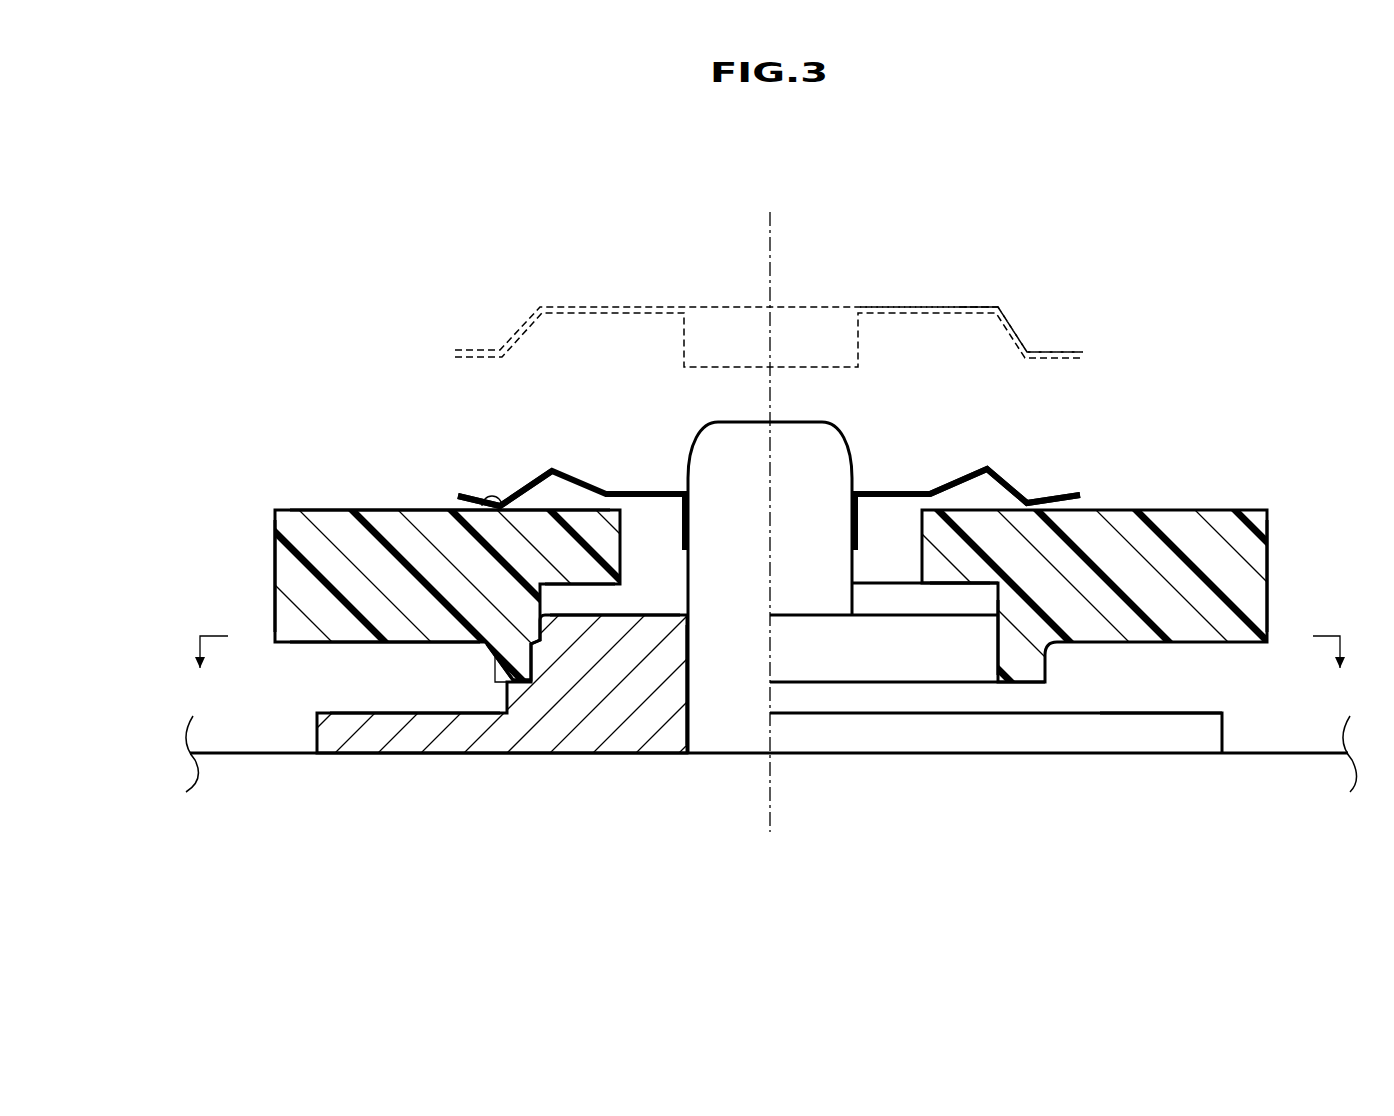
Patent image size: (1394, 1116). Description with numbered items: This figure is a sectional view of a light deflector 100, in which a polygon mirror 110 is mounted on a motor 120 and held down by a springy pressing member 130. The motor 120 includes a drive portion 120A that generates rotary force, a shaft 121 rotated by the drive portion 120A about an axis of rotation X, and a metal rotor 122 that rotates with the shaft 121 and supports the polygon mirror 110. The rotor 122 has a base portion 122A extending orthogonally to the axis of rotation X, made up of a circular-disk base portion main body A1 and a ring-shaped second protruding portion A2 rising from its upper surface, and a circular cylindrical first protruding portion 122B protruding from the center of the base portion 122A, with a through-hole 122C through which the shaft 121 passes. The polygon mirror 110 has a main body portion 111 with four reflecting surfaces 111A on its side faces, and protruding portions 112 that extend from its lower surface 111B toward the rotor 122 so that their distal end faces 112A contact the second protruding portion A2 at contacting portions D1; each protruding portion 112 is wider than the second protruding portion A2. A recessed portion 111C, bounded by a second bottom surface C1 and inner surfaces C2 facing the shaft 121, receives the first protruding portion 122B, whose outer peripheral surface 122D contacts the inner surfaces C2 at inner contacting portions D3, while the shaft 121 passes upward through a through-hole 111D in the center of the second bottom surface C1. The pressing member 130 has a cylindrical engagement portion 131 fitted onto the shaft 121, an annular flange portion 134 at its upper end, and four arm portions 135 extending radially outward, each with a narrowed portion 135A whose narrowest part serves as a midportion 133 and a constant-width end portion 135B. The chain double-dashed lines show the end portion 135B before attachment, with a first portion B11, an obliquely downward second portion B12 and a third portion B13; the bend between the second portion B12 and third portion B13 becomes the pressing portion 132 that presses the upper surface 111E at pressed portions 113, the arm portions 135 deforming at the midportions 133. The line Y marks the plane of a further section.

The electronic device 100 is at (1166, 262).
The polygon mirror 110 is at (287, 503).
The main body portion 111 is at (340, 525).
The reflecting surfaces 111A is at (275, 554).
The lower surface 111B is at (340, 644).
The recessed portion 111C is at (1010, 812).
The through-hole 111D is at (640, 618).
The upper surface 111E is at (383, 510).
The protruding portions 112 is at (517, 663).
The distal end faces 112A is at (533, 655).
The pressed portions 113 is at (478, 513).
The motor 120 is at (1300, 750).
The drive portion 120A is at (1255, 760).
The shaft 121 is at (723, 437).
The rotor 122 is at (312, 706).
The base portion 122A is at (440, 818).
The first protruding portion 122B is at (655, 628).
The through-hole 122C is at (692, 723).
The outer peripheral surface 122D is at (997, 657).
The pressing member 130 is at (1097, 353).
The engagement portion 131 is at (858, 331).
The pressing portions 132 is at (530, 500).
The midportions 133 is at (932, 488).
The annular flange portion 134 is at (650, 492).
The arm portions 135 is at (967, 457).
The narrowed portion 135A is at (919, 305).
The end portion 135B is at (1115, 230).
The first portion B11 is at (971, 306).
The second portion B12 is at (1012, 325).
The third portion B13 is at (1058, 347).
The base portion main body A1 is at (357, 740).
The second protruding portion A2 is at (507, 683).
The second bottom surface C1 is at (950, 583).
The inner surfaces C2 is at (998, 605).
The contacting portions D1 is at (1020, 683).
The inner contacting portions D3 is at (533, 645).
The axis of rotation X is at (765, 237).
The line Y- Y is at (771, 653).